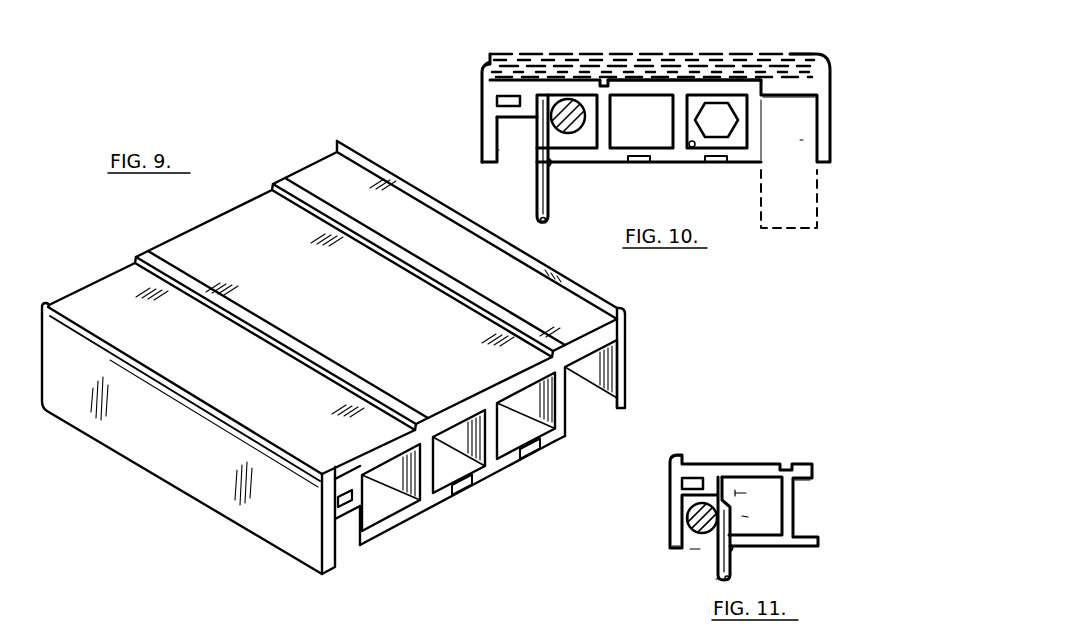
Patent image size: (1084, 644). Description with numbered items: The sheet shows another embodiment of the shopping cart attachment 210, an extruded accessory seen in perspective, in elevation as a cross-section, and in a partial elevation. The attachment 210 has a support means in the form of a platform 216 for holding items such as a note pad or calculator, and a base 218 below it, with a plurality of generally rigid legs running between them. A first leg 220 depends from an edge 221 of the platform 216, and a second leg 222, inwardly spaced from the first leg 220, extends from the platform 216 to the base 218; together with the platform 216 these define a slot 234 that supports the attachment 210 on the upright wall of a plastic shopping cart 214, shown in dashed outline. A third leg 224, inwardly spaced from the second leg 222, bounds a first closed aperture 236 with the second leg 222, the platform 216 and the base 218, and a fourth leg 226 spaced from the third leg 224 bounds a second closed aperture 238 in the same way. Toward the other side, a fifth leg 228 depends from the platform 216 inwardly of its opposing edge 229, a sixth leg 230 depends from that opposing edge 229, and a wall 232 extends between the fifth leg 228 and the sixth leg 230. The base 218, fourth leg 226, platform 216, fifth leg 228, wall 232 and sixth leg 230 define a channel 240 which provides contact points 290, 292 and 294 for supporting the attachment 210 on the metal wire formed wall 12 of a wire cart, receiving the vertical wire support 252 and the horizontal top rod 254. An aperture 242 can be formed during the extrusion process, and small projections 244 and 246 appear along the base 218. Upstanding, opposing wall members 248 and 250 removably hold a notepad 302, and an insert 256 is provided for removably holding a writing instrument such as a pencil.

In FIG. 10, the metal wire formed wall 12 is at (546, 231).
In FIG. 11, the metal wire formed wall 12 is at (714, 578).
In FIG. 9, the shopping cart attachment 210 is at (304, 130).
In FIG. 10, the shopping cart attachment 210 is at (470, 58).
In FIG. 11, the shopping cart attachment 210 is at (768, 430).
In FIG. 10, the plastic shopping cart 214 is at (785, 219).
In FIG. 9, the platform 216 is at (227, 218).
In FIG. 10, the platform 216 is at (723, 85).
In FIG. 11, the platform 216 is at (808, 466).
In FIG. 10, the base 218 is at (667, 170).
In FIG. 11, the base 218 is at (803, 548).
In FIG. 9, the first leg 220 is at (626, 375).
In FIG. 10, the first leg 220 is at (834, 148).
In FIG. 9, the edge 221 is at (625, 309).
In FIG. 10, the edge 221 is at (834, 80).
In FIG. 9, the second leg 222 is at (560, 420).
In FIG. 10, the second leg 222 is at (762, 145).
In FIG. 9, the third leg 224 is at (496, 450).
In FIG. 10, the third leg 224 is at (695, 150).
In FIG. 9, the fourth leg 226 is at (428, 494).
In FIG. 10, the fourth leg 226 is at (610, 124).
In FIG. 11, the fourth leg 226 is at (794, 515).
In FIG. 9, the fifth leg 228 is at (383, 480).
In FIG. 10, the fifth leg 228 is at (527, 100).
In FIG. 11, the fifth leg 228 is at (712, 483).
In FIG. 9, the opposing edge 229 is at (315, 505).
In FIG. 10, the opposing edge 229 is at (481, 92).
In FIG. 11, the opposing edge 229 is at (671, 458).
In FIG. 9, the sixth leg 230 is at (320, 575).
In FIG. 10, the sixth leg 230 is at (481, 155).
In FIG. 11, the sixth leg 230 is at (671, 543).
In FIG. 9, the wall 232 is at (340, 520).
In FIG. 10, the wall 232 is at (508, 117).
In FIG. 11, the wall 232 is at (683, 495).
In FIG. 9, the slot 234 is at (590, 408).
In FIG. 10, the slot 234 is at (803, 137).
In FIG. 9, the first closed aperture 236 is at (516, 418).
In FIG. 10, the first closed aperture 236 is at (778, 119).
In FIG. 10, the second closed aperture 238 is at (656, 108).
In FIG. 11, the second closed aperture 238 is at (813, 496).
In FIG. 9, the channel 240 is at (366, 553).
In FIG. 10, the channel 240 is at (507, 152).
In FIG. 11, the channel 240 is at (696, 552).
In FIG. 9, the aperture 242 is at (343, 494).
In FIG. 10, the aperture 242 is at (497, 101).
In FIG. 11, the aperture 242 is at (697, 477).
In FIG. 9, the protrusion 244 is at (532, 456).
In FIG. 10, the protrusion 244 is at (719, 165).
In FIG. 9, the protrusion 246 is at (470, 498).
In FIG. 10, the protrusion 246 is at (640, 165).
In FIG. 9, the upstanding wall member 248 is at (372, 158).
In FIG. 10, the upstanding wall member 248 is at (823, 63).
In FIG. 9, the upstanding wall member 250 is at (65, 303).
In FIG. 10, the upstanding wall member 250 is at (486, 63).
In FIG. 11, the upstanding wall member 250 is at (683, 460).
In FIG. 10, the vertical wire support 252 is at (549, 222).
In FIG. 11, the vertical wire support 252 is at (732, 573).
In FIG. 10, the horizontal top rod 254 is at (572, 99).
In FIG. 11, the horizontal top rod 254 is at (697, 505).
In FIG. 10, the insert 256 is at (748, 118).
In FIG. 10, the contact point 290 is at (549, 172).
In FIG. 11, the contact point 290 is at (732, 557).
In FIG. 10, the contact point 292 is at (537, 112).
In FIG. 11, the contact point 294 is at (689, 518).
In FIG. 10, the notepad 302 is at (643, 46).